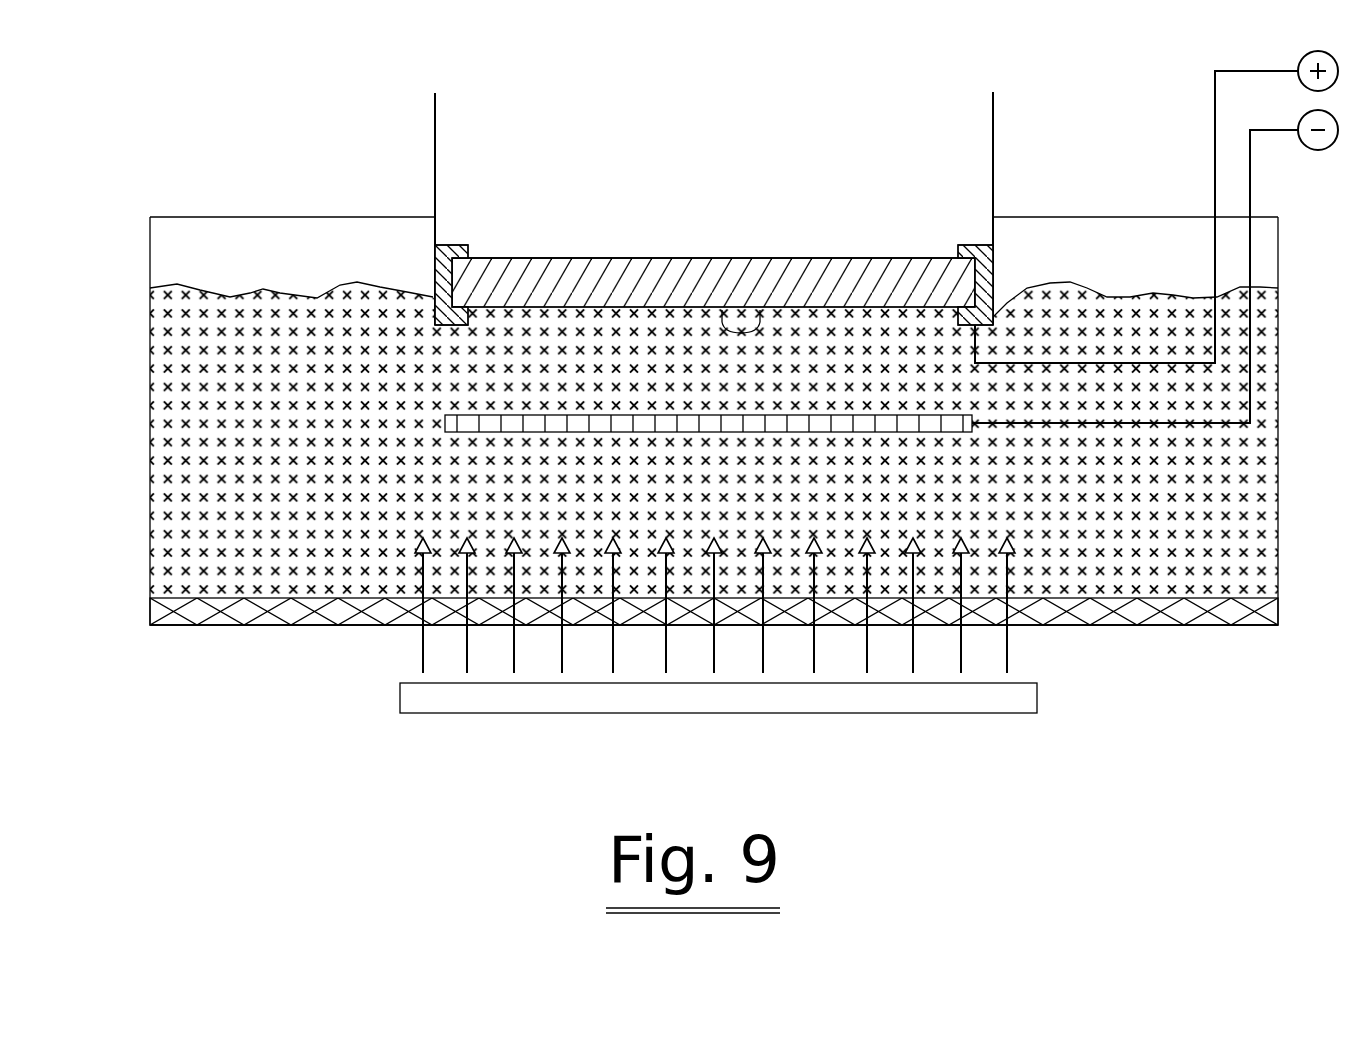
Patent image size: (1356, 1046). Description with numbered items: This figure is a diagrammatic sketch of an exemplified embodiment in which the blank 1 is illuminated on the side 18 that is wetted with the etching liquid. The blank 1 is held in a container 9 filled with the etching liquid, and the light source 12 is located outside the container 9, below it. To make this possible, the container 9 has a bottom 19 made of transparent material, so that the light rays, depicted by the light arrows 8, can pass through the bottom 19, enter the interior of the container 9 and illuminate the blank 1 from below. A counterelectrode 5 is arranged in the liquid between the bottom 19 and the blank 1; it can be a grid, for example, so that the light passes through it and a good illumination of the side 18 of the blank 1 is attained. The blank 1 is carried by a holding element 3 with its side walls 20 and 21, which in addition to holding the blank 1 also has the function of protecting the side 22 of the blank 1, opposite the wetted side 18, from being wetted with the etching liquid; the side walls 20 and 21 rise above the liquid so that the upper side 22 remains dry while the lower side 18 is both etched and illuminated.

The blank 1 is at (555, 282).
The holding element 3 is at (980, 247).
The counterelectrode 5 is at (932, 425).
The light arrows 8 is at (422, 648).
The container 9 is at (1280, 440).
The light source 12 is at (660, 713).
The side of blank wetted with etching liquid 18 is at (760, 310).
The bottom 19 is at (1227, 626).
The side wall 20 is at (993, 150).
The side wall 21 is at (435, 162).
The side of blank opposite the wetted side 22 is at (818, 258).